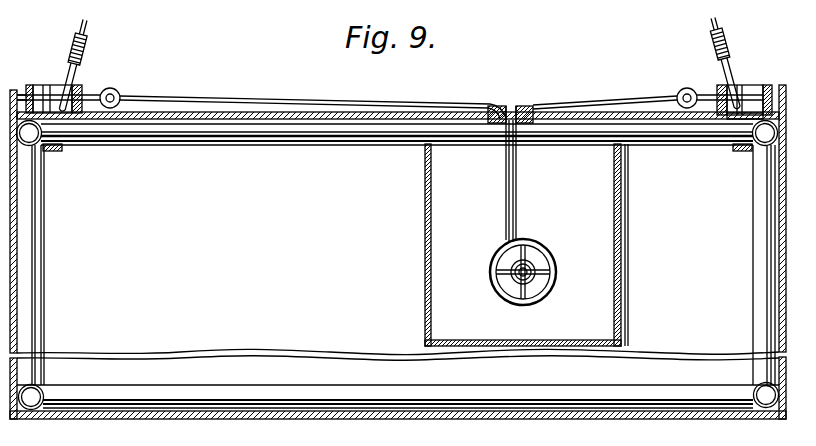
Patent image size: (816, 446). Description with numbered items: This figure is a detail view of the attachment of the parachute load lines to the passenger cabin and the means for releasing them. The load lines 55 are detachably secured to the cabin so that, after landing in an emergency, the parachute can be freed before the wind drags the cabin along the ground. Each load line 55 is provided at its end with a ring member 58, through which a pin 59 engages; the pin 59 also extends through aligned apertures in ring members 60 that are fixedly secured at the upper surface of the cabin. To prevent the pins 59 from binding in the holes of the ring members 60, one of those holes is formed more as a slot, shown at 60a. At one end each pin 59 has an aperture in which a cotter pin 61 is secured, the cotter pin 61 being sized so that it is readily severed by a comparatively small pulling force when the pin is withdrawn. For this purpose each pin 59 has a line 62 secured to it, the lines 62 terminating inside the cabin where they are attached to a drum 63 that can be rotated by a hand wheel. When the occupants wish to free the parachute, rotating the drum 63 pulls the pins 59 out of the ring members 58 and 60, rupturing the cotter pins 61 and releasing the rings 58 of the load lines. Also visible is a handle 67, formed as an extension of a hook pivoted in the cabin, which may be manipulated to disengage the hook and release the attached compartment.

The load lines 55 is at (90, 30).
The ring members 58 is at (736, 90).
The pins 59 is at (98, 96).
The ring members 60 is at (45, 85).
The slot 60a is at (722, 114).
The cotter pins 61 is at (24, 91).
The line 62 is at (527, 105).
The drum 63 is at (537, 265).
The handles 67 is at (556, 286).